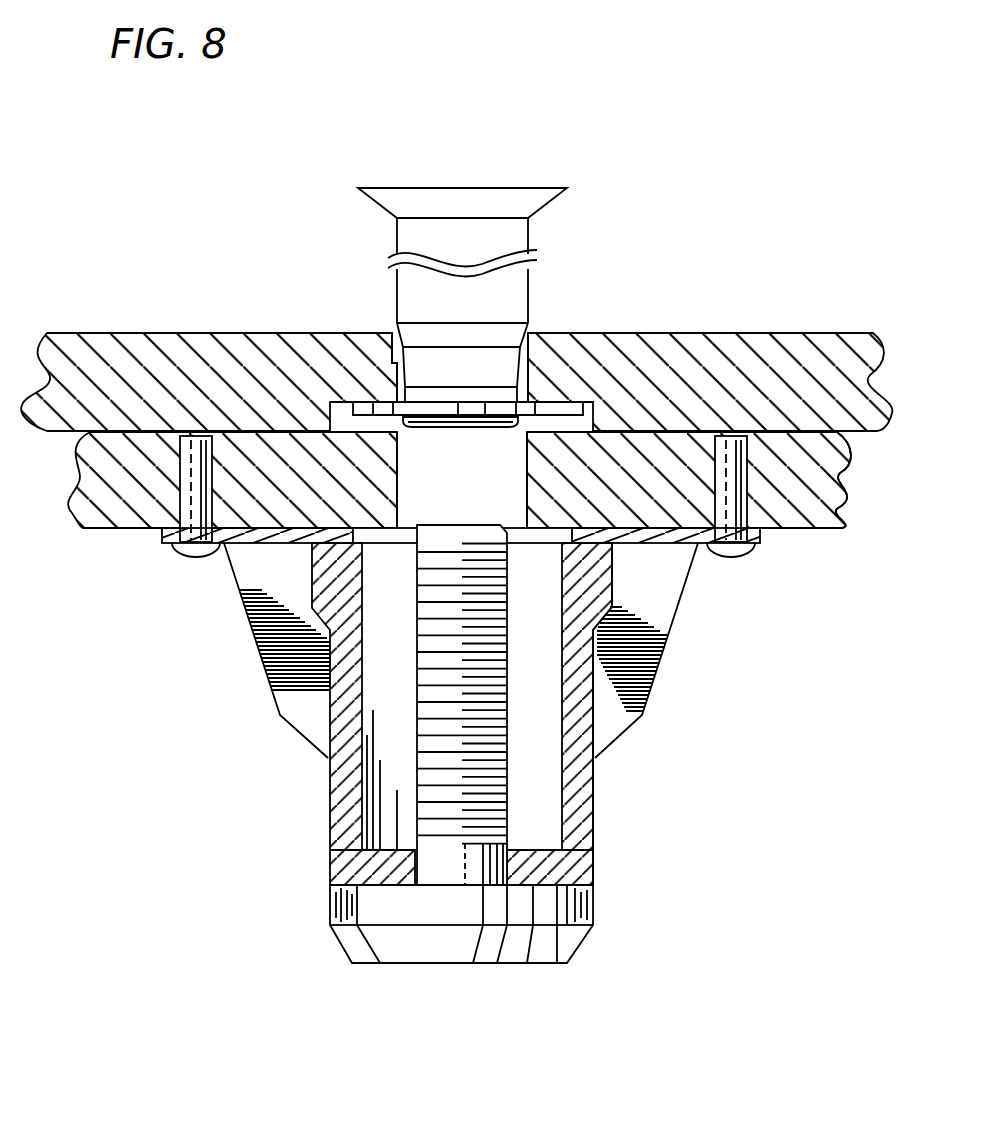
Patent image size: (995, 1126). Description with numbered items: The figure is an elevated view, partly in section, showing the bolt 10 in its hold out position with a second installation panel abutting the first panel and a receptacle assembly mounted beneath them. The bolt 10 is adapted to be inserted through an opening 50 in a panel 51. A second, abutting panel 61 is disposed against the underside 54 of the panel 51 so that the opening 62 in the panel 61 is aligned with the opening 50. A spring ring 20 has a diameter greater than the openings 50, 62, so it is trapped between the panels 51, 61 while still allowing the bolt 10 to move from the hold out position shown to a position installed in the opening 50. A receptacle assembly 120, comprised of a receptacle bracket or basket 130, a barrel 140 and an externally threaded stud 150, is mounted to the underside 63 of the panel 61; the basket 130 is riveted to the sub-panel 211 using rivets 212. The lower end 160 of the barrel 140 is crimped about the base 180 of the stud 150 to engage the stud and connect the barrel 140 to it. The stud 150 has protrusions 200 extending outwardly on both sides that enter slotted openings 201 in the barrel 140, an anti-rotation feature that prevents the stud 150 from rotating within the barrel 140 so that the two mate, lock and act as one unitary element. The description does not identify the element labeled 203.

The bolt 10 is at (566, 241).
The spring ring 20 is at (562, 408).
The opening 50 is at (397, 384).
The panel 51 is at (192, 333).
The underside of panel 54 is at (630, 437).
The abutting panel 61 is at (820, 473).
The opening 62 is at (397, 481).
The underside of panel 63 is at (112, 529).
The receptacle assembly 120 is at (616, 751).
The receptacle bracket 130 is at (637, 637).
The barrel 140 is at (603, 857).
The externally threaded stud 150 is at (507, 778).
The lower end of barrel 160 is at (343, 947).
The base of stud 180 is at (514, 912).
The protrusions 200 is at (335, 912).
The slotted openings 201 is at (335, 889).
The bottom flange 203 is at (362, 862).
The sub-panel 211 is at (813, 529).
The rivets 212 is at (190, 551).